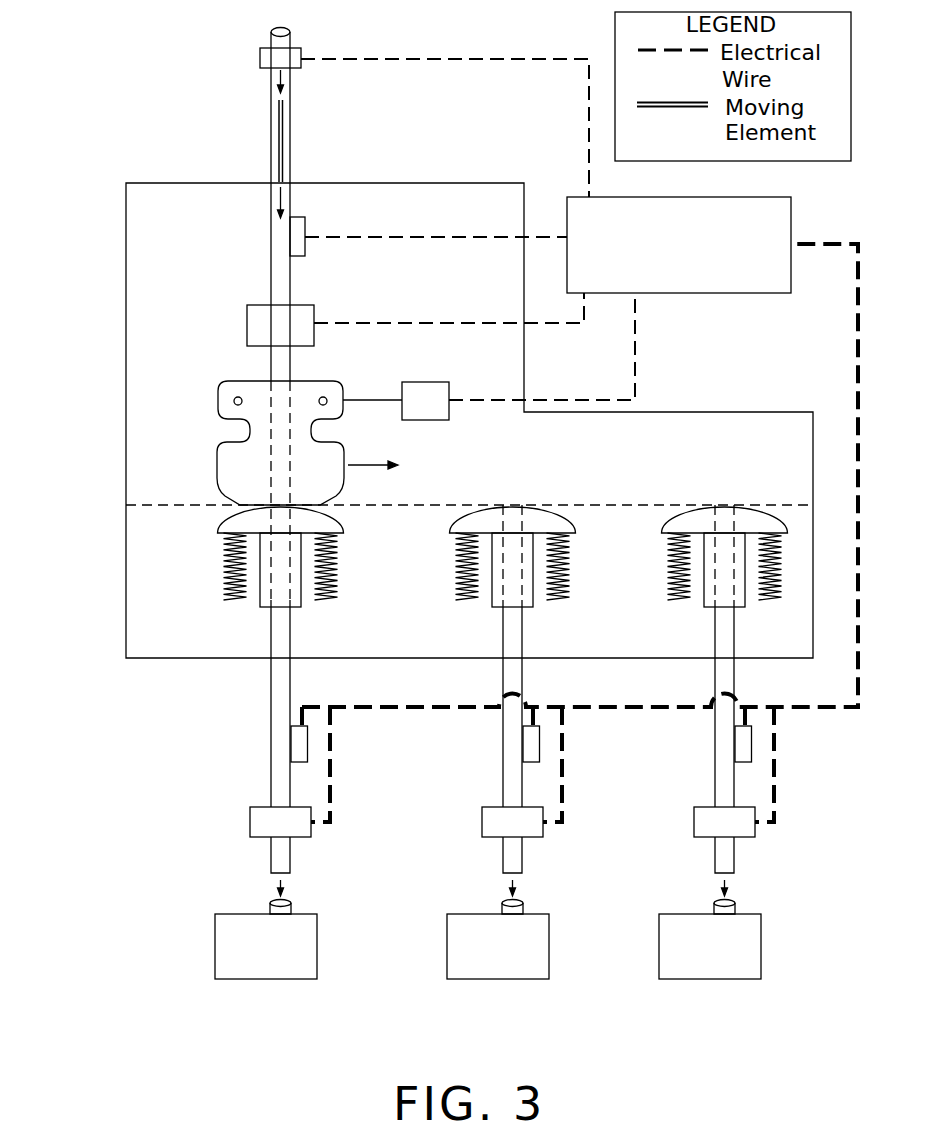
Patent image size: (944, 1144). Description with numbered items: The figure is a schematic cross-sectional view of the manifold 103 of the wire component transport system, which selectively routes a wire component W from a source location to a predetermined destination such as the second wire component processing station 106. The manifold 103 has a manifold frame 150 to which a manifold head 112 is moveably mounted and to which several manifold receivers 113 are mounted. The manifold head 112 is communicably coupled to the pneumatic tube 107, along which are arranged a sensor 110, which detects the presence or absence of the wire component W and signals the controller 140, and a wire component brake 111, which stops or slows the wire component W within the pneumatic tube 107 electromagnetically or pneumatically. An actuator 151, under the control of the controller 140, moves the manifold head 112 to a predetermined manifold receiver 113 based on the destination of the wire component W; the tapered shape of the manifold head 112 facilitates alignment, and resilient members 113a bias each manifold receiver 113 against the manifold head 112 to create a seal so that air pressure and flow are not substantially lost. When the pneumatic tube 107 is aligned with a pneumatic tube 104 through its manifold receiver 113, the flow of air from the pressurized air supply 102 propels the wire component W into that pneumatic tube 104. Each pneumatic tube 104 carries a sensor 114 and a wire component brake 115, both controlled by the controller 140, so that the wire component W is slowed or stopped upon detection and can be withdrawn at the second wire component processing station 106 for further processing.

The pressurized air supply 102 is at (297, 48).
The manifold 103 is at (90, 466).
The pneumatic tube 104 is at (290, 641).
The second wire component processing station 106 is at (246, 954).
The pneumatic tube 107 is at (290, 147).
The sensor 110 is at (297, 217).
The wire component brake 111 is at (301, 305).
The manifold head 112 is at (343, 452).
The manifold receiver 113 is at (343, 521).
The resilient member 113a is at (224, 566).
The sensor 114 is at (300, 724).
The wire component brake 115 is at (296, 837).
The controller 140 is at (712, 293).
The manifold frame 150 is at (182, 658).
The actuator 151 is at (444, 412).
The wire component W is at (279, 128).